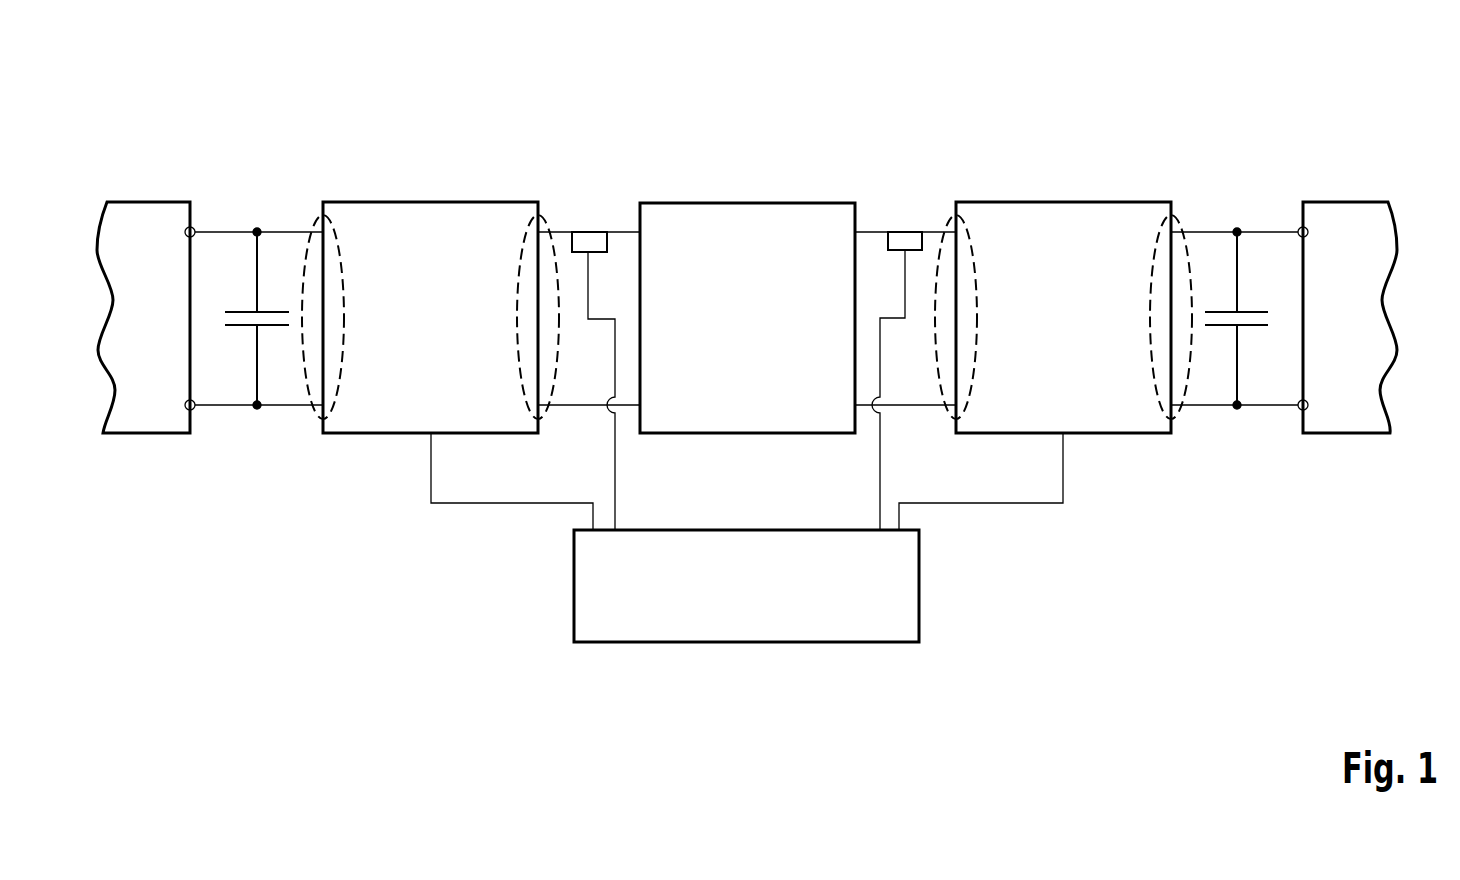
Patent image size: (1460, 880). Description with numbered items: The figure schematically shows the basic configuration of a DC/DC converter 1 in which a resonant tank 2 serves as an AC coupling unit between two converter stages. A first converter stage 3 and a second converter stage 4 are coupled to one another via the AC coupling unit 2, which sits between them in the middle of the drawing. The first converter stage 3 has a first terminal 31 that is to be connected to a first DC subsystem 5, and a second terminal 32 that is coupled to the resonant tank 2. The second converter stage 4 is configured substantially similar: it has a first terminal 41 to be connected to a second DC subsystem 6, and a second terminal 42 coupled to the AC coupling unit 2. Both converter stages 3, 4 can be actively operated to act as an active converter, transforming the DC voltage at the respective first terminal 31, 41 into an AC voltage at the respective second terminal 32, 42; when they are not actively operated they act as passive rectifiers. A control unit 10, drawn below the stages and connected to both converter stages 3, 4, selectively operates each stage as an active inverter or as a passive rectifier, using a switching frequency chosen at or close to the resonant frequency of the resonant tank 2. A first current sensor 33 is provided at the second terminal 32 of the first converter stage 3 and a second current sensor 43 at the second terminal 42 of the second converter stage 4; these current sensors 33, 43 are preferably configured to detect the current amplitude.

The DC/DC converter 1 is at (1075, 103).
The resonant tank 2 is at (756, 335).
The first converter stage 3 is at (439, 335).
The second converter stage 4 is at (1072, 335).
The first DC subsystem 5 is at (141, 335).
The second DC subsystem 6 is at (1336, 335).
The control unit 10 is at (730, 603).
The first terminal 31 is at (308, 246).
The second terminal 32 is at (522, 250).
The first current sensor 33 is at (589, 240).
The first terminal 41 is at (1186, 246).
The second terminal 42 is at (970, 246).
The second current sensor 43 is at (905, 240).